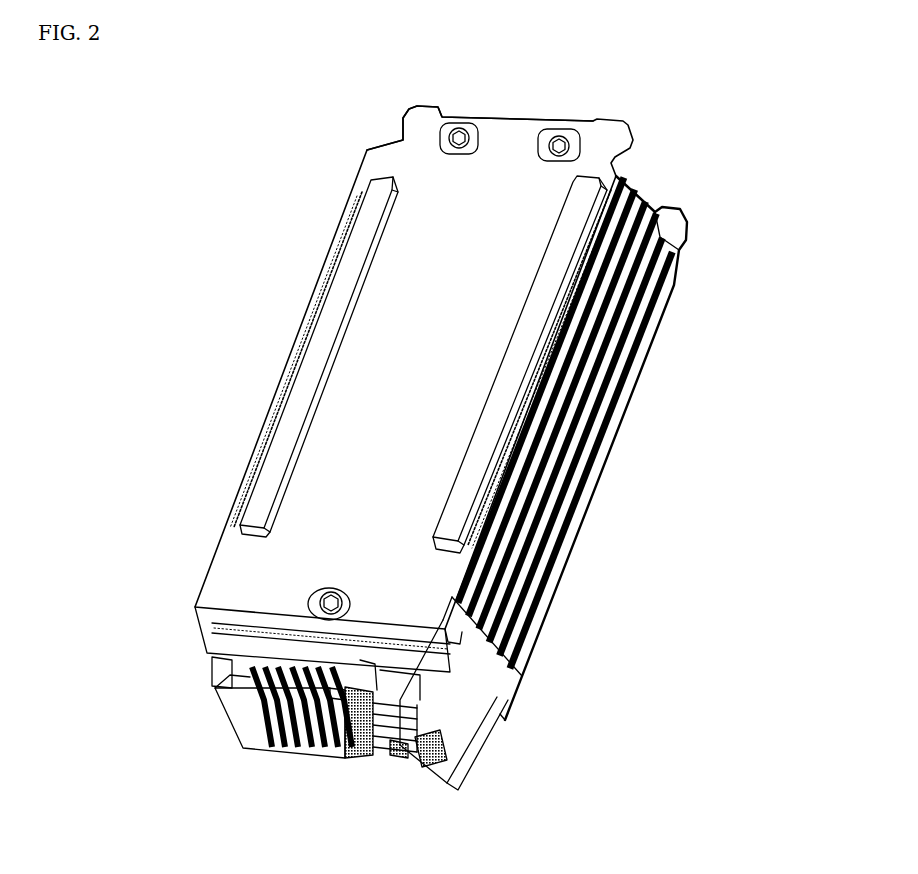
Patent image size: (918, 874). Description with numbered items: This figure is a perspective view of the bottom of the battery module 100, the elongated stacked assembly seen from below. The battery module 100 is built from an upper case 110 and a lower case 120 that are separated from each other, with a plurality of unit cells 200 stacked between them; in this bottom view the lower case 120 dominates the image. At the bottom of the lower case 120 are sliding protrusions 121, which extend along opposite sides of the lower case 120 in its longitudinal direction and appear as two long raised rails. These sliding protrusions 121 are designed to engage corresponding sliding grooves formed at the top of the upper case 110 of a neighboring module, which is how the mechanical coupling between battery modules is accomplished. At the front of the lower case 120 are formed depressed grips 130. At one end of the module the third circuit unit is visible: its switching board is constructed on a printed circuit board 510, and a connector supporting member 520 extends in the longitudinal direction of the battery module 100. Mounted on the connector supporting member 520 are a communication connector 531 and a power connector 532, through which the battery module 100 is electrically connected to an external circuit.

The battery module 100 is at (87, 110).
The upper case 110 is at (595, 500).
The lower case 120 is at (280, 402).
The sliding protrusions 121 is at (332, 317).
The depressed grips 130 is at (402, 130).
The unit cells 200 is at (612, 388).
The printed circuit board 510 is at (197, 637).
The connector supporting member 520 is at (478, 704).
The communication connector 531 is at (455, 745).
The power connector 532 is at (399, 752).